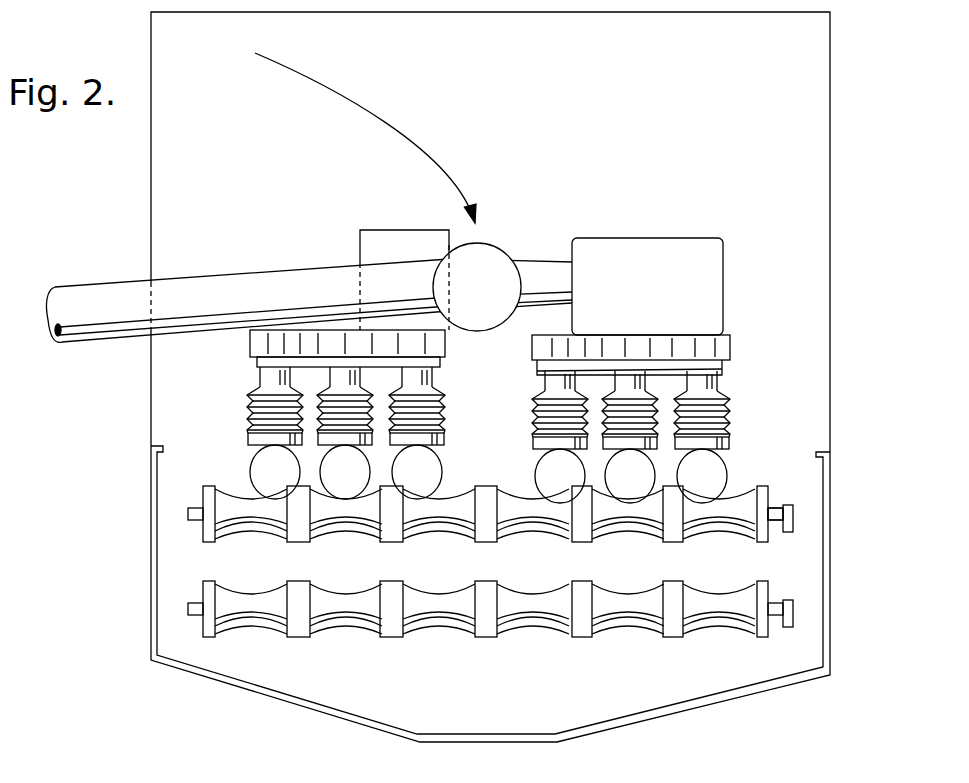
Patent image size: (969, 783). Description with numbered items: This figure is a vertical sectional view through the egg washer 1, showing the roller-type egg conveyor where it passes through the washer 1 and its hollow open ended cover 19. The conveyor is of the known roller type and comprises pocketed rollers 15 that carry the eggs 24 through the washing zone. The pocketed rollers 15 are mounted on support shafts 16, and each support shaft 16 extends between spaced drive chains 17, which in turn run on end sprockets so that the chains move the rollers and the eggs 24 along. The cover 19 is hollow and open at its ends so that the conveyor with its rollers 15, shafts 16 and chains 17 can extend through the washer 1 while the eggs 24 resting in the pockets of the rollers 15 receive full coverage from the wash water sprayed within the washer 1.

The washer 1 is at (850, 334).
The pocketed rollers 15 is at (540, 552).
The support shafts 16 is at (779, 530).
The drive chains 17 is at (855, 614).
The hollow open ended cover 19 is at (830, 188).
The eggs 24 is at (712, 473).